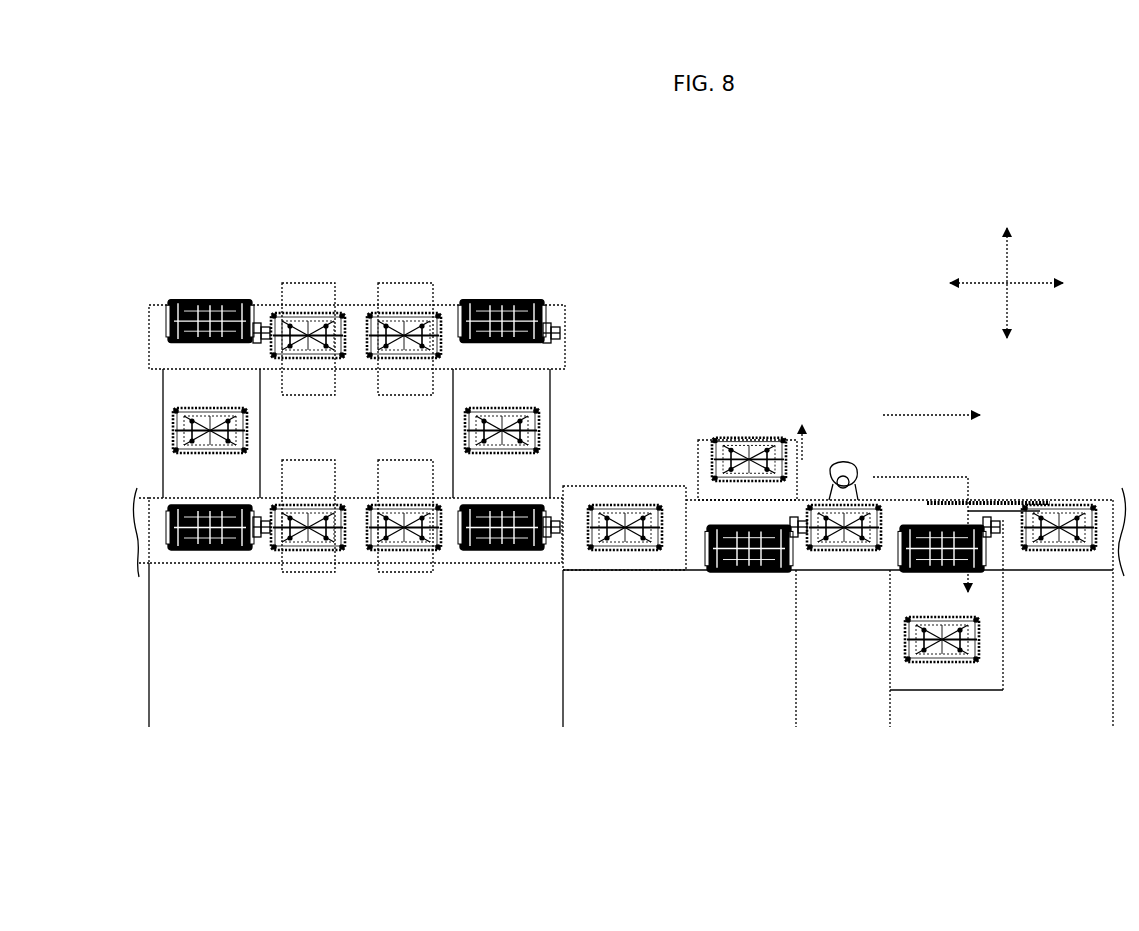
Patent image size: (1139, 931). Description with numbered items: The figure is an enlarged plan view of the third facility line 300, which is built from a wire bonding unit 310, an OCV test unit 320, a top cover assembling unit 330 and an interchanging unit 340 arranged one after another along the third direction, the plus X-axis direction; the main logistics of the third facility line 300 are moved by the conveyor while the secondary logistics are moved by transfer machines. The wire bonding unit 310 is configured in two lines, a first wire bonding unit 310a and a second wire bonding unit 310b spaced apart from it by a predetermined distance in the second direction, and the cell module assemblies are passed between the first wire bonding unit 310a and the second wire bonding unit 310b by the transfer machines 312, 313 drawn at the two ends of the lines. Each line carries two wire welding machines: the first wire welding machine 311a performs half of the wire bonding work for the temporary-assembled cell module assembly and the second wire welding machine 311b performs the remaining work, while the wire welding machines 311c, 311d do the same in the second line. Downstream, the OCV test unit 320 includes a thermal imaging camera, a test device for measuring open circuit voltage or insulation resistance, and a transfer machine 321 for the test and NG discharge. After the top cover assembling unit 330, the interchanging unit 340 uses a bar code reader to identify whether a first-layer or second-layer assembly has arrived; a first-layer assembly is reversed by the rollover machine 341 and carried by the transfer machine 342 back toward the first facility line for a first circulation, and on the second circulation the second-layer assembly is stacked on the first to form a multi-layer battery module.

The third facility line 300 is at (240, 218).
The wire bonding unit 310 is at (563, 722).
The first wire bonding unit 310a is at (147, 496).
The second wire bonding unit 310b is at (146, 301).
The first wire welding machine 311a is at (303, 548).
The second wire welding machine 311b is at (400, 548).
The wire welding machine 311c is at (314, 322).
The wire welding machine 311d is at (410, 322).
The transfer machine 312 is at (200, 551).
The transfer machine 313 is at (490, 552).
The OCV test unit 320 is at (796, 722).
The transfer machine 321 is at (742, 555).
The top cover assembling unit 330 is at (890, 722).
The interchanging unit 340 is at (1113, 722).
The rollover machine 341 is at (1020, 500).
The transfer machine 342 is at (976, 501).